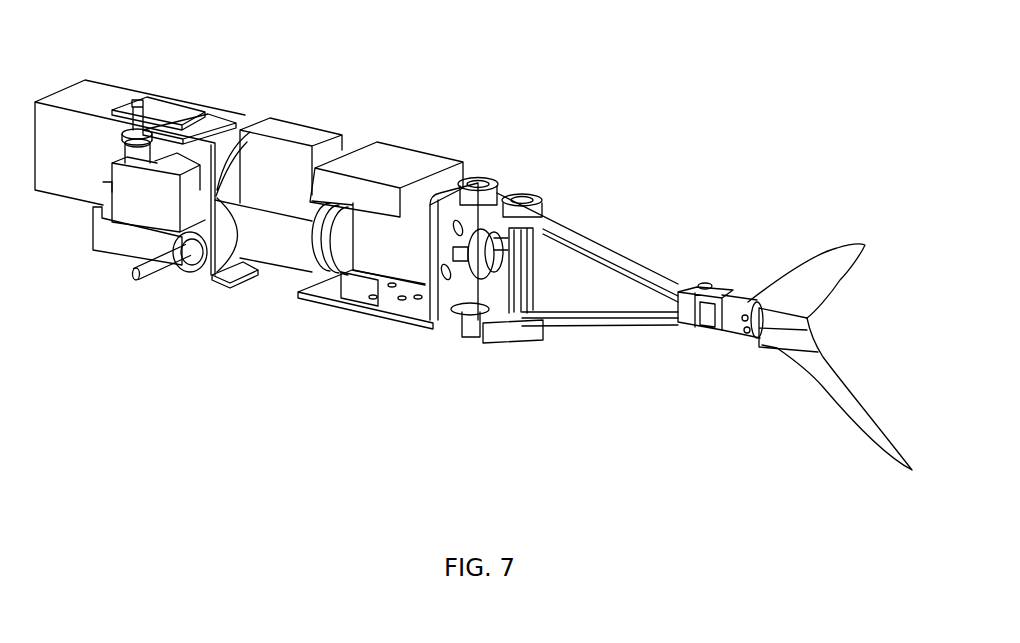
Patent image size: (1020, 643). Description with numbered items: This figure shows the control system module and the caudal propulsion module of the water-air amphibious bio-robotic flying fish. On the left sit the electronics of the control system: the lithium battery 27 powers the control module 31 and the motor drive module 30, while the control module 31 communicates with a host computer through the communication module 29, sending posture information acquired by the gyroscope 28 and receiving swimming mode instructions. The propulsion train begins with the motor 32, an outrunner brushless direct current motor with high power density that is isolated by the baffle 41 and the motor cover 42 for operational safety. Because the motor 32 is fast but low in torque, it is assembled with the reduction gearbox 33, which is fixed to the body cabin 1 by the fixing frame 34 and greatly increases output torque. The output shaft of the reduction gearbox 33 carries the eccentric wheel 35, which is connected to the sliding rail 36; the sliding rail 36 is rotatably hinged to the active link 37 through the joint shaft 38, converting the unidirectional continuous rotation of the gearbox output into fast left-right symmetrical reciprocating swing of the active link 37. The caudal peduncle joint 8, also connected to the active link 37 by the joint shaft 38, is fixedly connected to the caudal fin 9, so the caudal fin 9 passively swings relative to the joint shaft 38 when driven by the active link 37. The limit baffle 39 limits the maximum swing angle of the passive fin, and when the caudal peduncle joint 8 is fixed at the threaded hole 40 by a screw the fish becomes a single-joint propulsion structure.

The body cabin 1 is at (364, 103).
The caudal peduncle joint 8 is at (735, 325).
The caudal fin 9 is at (800, 360).
The lithium battery 27 is at (98, 102).
The gyroscope 28 is at (163, 102).
The communication module 29 is at (205, 118).
The motor drive module 30 is at (273, 128).
The control module 31 is at (375, 152).
The motor 32 is at (290, 262).
The reduction gearbox 33 is at (383, 262).
The fixing frame 34 is at (447, 292).
The eccentric wheel 35 is at (472, 280).
The sliding rail 36 is at (513, 290).
The active link 37 is at (553, 229).
The joint shaft 38 is at (690, 330).
The limit baffle 39 is at (680, 300).
The threaded hole 40 is at (730, 292).
The baffle 41 is at (223, 258).
The motor cover 42 is at (237, 190).